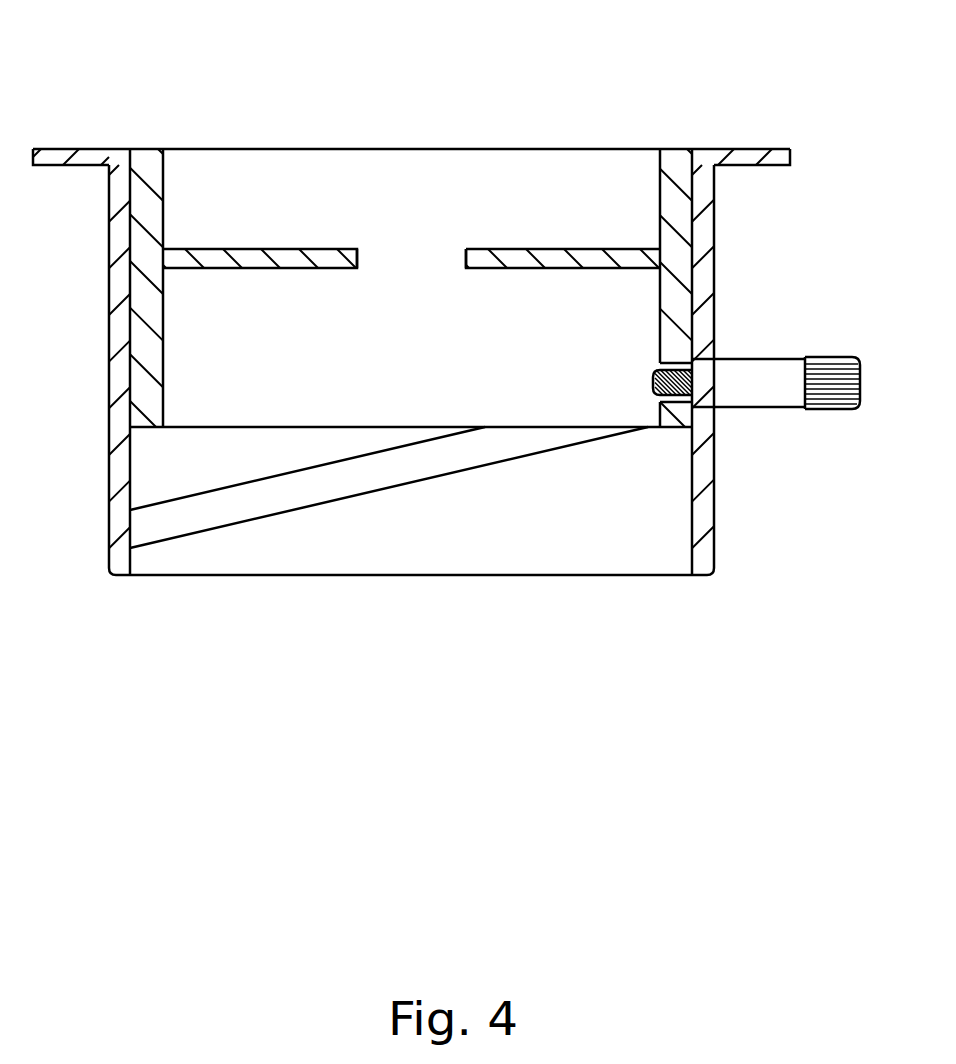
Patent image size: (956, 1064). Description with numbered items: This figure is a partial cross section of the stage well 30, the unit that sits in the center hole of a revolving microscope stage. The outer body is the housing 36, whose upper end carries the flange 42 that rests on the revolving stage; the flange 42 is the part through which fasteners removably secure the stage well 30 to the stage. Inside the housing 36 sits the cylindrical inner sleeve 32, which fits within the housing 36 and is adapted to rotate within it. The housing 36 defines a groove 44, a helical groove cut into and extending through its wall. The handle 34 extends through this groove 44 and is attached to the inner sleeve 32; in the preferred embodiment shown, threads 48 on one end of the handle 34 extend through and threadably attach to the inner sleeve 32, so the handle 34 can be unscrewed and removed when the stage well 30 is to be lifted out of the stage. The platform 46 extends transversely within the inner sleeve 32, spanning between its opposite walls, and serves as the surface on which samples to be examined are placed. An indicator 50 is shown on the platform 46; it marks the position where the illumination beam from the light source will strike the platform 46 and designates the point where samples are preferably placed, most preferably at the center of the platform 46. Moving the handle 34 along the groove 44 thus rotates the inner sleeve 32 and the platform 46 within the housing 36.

The stage well 30 is at (186, 104).
The inner sleeve 32 is at (160, 382).
The handle 34 is at (763, 390).
The housing 36 is at (109, 430).
The flange 42 is at (752, 153).
The groove 44 is at (337, 490).
The platform 46 is at (532, 248).
The threads 48 is at (651, 384).
The indicator 50 is at (403, 260).